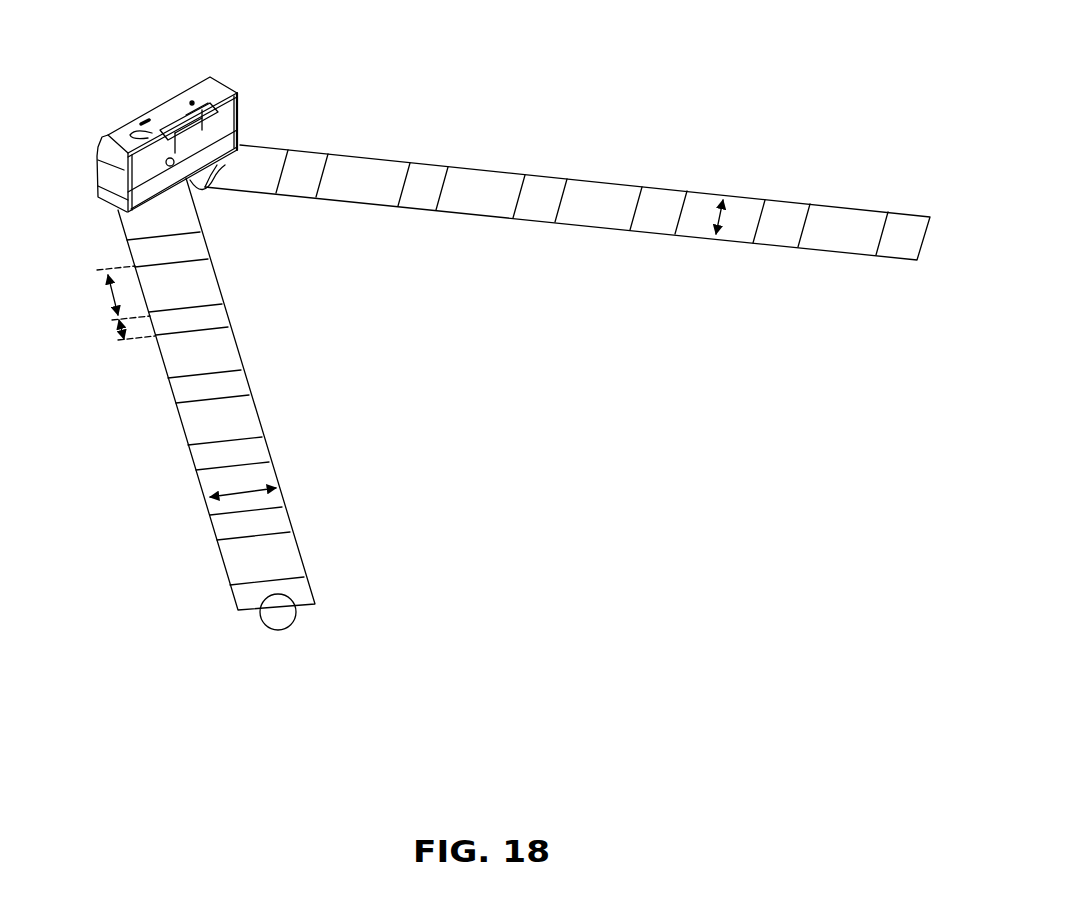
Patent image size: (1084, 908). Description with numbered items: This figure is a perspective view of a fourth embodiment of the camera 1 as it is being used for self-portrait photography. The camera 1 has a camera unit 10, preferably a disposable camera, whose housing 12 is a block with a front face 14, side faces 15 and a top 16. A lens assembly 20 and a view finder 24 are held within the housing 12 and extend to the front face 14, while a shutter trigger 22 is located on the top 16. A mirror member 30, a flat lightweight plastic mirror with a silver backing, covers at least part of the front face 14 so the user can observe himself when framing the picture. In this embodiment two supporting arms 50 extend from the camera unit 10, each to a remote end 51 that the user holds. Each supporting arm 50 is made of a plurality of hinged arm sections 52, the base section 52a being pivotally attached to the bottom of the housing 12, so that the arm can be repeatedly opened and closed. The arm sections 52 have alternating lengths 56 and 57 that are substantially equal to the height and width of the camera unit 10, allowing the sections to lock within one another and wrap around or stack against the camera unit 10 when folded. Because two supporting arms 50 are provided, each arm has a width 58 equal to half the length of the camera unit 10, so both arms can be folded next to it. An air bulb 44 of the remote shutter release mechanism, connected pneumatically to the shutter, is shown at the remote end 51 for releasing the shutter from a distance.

The camera 1 is at (665, 106).
The camera unit 10 is at (230, 83).
The housing 12 is at (238, 103).
The front face 14 is at (238, 133).
The side face 15 is at (105, 187).
The top 16 is at (200, 92).
The lens assembly 20 is at (131, 141).
The shutter trigger 22 is at (140, 127).
The view finder 24 is at (175, 118).
The mirror member 30 is at (122, 173).
The air bulb 44 is at (288, 630).
The supporting arm 50 is at (601, 224).
The remote end 51 is at (900, 253).
The arm section 52 is at (270, 160).
The base section 52a is at (194, 184).
The length 56 is at (108, 292).
The length 57 is at (118, 340).
The width 58 is at (720, 220).